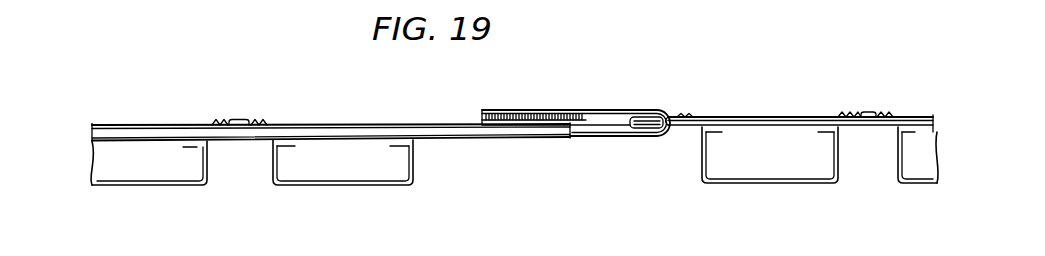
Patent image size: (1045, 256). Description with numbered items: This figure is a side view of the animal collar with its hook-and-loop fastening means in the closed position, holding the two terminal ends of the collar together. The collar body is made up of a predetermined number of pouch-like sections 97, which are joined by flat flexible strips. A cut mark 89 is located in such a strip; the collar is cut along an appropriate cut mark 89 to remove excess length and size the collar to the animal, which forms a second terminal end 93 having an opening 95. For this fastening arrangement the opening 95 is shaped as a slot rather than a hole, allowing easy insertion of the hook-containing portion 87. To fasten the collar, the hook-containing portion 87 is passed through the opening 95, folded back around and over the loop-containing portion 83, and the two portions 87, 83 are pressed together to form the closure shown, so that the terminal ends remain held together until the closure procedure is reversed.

The loop-containing portion 83 is at (552, 139).
The hook-containing portion 87 is at (585, 110).
The cut mark 89 is at (213, 122).
The second terminal end 93 is at (619, 121).
The opening 95 is at (241, 119).
The pouch-like sections 97 is at (173, 168).